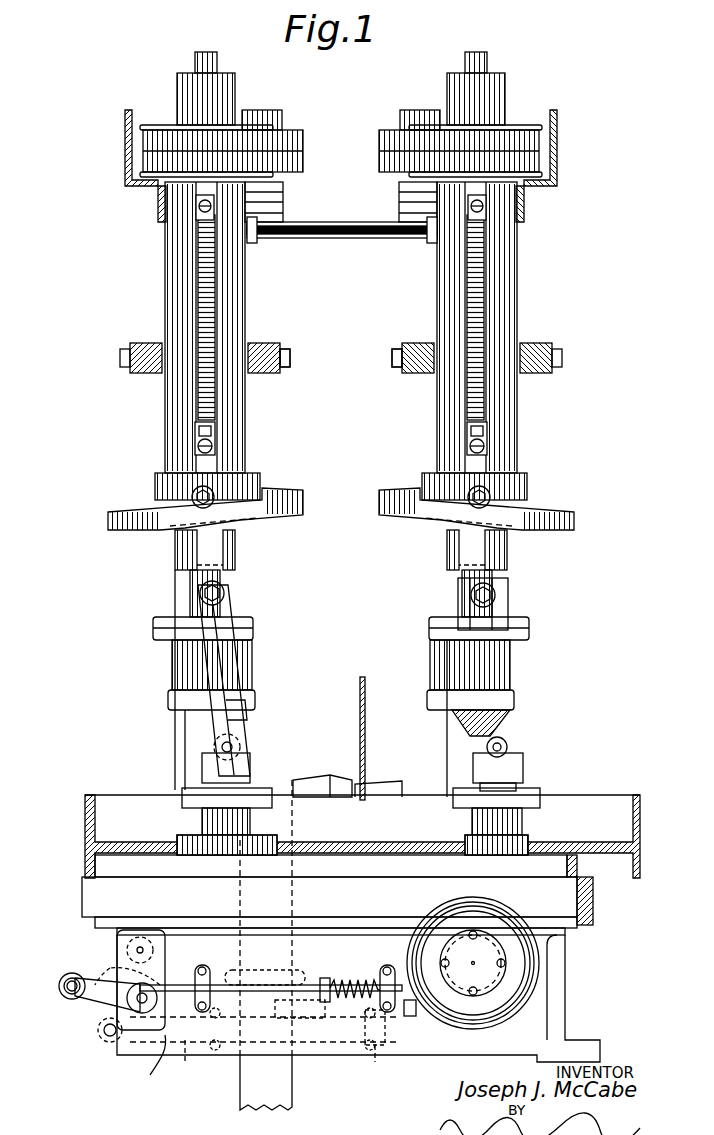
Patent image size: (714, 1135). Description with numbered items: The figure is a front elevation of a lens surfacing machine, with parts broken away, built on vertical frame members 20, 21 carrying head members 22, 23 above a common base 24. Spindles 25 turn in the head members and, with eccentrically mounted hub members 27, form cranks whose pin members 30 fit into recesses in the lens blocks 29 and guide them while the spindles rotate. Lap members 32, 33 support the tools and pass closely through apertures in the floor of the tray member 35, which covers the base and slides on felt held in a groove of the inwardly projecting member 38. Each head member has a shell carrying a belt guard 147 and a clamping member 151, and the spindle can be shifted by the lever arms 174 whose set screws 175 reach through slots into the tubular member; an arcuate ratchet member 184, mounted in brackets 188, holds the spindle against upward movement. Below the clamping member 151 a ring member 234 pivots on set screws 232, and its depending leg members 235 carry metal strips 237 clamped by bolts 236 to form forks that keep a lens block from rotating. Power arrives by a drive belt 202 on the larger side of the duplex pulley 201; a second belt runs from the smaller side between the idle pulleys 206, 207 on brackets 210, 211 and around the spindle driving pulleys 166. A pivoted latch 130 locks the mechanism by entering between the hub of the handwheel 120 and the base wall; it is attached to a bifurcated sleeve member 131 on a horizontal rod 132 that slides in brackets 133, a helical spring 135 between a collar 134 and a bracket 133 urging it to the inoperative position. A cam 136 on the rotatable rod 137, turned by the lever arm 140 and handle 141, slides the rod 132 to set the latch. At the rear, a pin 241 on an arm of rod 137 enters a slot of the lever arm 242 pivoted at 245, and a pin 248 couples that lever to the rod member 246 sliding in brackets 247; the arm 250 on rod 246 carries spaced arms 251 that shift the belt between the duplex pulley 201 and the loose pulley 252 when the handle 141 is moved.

The vertical frame member 20 is at (447, 745).
The vertical frame member 21 is at (178, 742).
The head member 22 is at (518, 436).
The head member 23 is at (246, 440).
The common base 24 is at (566, 978).
The spindle 25 is at (217, 63).
The eccentrically mounted hub member 27 is at (250, 670).
The lens block 29 is at (250, 762).
The pin member 30 is at (245, 714).
The lap member 32 is at (506, 840).
The lap member 33 is at (212, 838).
The tray member 35 is at (640, 836).
The inwardly projecting member 38 is at (366, 725).
The handwheel 120 is at (470, 1030).
The pivoted latch 130 is at (411, 953).
The bifurcated sleeve member 131 is at (410, 1016).
The horizontal rod 132 is at (312, 984).
The bracket 133 is at (206, 965).
The collar 134 is at (324, 990).
The helical spring 135 is at (364, 1010).
The cam 136 is at (168, 1040).
The rod 137 is at (150, 990).
The lever arm 140 is at (100, 1008).
The handle 141 is at (60, 993).
The belt guard 147 is at (125, 158).
The clamping member 151 is at (155, 488).
The spindle driving pulley 166 is at (158, 122).
The lever arm 174 is at (260, 346).
The set screw 175 is at (290, 355).
The arcuate ratchet member 184 is at (200, 263).
The bracket 188 is at (197, 210).
The duplex pulley 201 is at (406, 794).
The drive belt 202 is at (292, 1101).
The idle pulley 206 is at (296, 128).
The idle pulley 207 is at (394, 128).
The bracket 210 is at (283, 208).
The bracket 211 is at (400, 206).
The set screw 232 is at (192, 510).
The ring member 234 is at (288, 502).
The leg member 235 is at (238, 563).
The bolt 236 is at (225, 592).
The metal strip 237 is at (232, 615).
The pin 241 is at (68, 974).
The lever arm 242 is at (122, 966).
The pivot 245 is at (150, 952).
The rod member 246 is at (186, 1064).
The bracket 247 is at (375, 1064).
The pin 248 is at (106, 1040).
The arm 250 is at (290, 1018).
The arm 251 is at (300, 974).
The loose pulley 252 is at (298, 792).